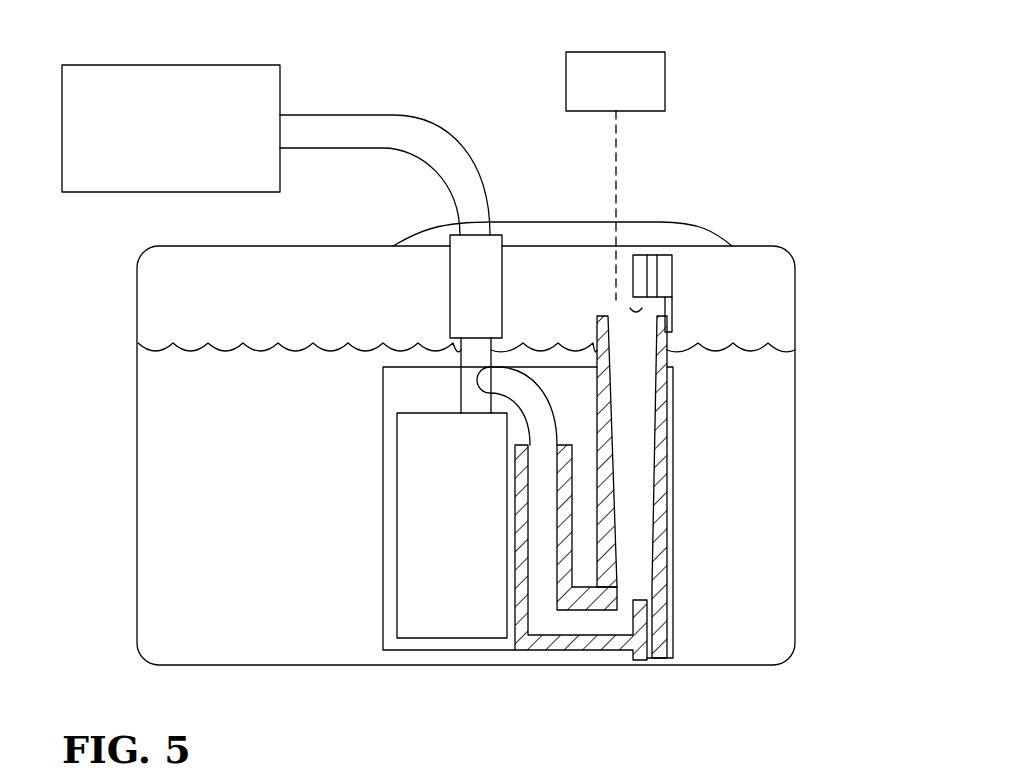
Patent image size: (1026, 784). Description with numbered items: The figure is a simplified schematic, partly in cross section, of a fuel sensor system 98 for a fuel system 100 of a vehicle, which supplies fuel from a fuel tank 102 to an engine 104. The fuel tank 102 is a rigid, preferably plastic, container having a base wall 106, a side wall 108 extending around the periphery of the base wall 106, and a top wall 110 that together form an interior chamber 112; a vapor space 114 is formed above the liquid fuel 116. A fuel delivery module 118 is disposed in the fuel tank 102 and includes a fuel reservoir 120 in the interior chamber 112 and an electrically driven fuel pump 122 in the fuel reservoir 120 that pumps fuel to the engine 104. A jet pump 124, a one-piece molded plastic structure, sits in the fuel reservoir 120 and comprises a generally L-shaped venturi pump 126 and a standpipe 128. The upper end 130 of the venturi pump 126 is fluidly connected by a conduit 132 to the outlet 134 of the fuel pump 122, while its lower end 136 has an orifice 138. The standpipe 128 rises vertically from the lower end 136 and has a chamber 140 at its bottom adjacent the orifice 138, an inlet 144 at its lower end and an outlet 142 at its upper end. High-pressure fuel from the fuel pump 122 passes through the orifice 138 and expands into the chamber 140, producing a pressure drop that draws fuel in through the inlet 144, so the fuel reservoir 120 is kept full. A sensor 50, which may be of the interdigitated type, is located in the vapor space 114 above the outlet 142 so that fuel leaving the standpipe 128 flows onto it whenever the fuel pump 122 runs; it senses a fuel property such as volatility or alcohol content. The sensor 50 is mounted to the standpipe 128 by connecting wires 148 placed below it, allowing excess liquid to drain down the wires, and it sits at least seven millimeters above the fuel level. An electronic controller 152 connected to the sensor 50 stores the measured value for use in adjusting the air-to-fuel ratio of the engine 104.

The sensor 50 is at (672, 280).
The fuel sensor system 98 is at (702, 387).
The fuel system 100 is at (134, 335).
The fuel tank 102 is at (141, 258).
The engine 104 is at (167, 80).
The base wall 106 is at (745, 667).
The side wall 108 is at (795, 520).
The top wall 110 is at (750, 246).
The interior chamber 112 is at (757, 435).
The vapor space 114 is at (553, 272).
The liquid fuel 116 is at (222, 348).
The fuel delivery module 118 is at (378, 617).
The fuel reservoir 120 is at (383, 485).
The fuel pump 122 is at (440, 627).
The jet pump 124 is at (567, 652).
The venturi pump 126 is at (513, 505).
The standpipe 128 is at (662, 478).
The upper end 130 is at (517, 452).
The conduit 132 is at (530, 397).
The outlet 134 is at (467, 375).
The lower end 136 is at (622, 645).
The orifice 138 is at (635, 565).
The chamber 140 is at (647, 548).
The outlet 142 is at (615, 310).
The inlet 144 is at (652, 657).
The connecting wires 148 is at (637, 312).
The electronic controller 152 is at (630, 60).